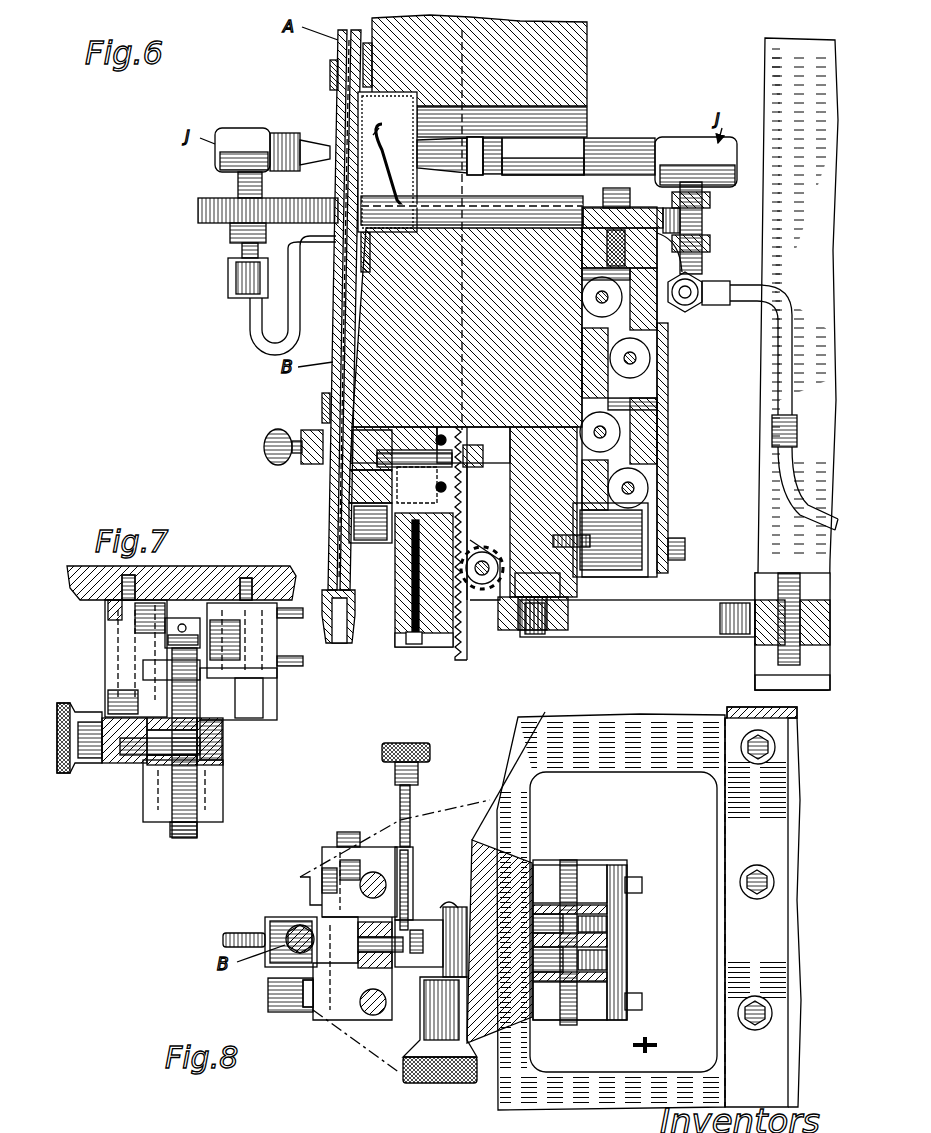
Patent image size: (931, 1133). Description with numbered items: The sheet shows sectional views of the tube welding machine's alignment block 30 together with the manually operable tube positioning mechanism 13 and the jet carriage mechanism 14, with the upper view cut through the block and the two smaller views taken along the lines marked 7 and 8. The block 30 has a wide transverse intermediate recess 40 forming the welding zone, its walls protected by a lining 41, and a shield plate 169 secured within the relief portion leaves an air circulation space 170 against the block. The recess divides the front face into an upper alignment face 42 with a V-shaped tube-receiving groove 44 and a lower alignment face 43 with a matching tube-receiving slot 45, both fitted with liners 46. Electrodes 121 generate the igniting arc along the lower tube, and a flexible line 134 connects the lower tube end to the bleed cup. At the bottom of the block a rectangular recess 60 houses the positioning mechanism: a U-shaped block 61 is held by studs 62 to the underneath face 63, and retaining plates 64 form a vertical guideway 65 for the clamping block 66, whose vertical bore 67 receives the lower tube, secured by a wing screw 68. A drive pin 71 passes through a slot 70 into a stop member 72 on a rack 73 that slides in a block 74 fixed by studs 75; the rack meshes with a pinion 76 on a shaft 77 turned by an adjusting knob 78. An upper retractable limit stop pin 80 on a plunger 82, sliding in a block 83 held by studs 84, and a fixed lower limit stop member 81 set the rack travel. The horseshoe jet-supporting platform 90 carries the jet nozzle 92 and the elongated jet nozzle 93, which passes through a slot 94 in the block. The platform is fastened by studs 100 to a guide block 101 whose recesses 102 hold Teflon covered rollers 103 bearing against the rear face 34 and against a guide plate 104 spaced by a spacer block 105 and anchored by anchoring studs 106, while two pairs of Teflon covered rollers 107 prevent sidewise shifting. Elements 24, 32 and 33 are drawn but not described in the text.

In FIG. 6, the section line 7- 7 is at (511, 428).
In FIG. 6, the section line 8- 8 is at (325, 421).
In FIG. 6, the manually operable tube positioning mechanism 13 is at (390, 580).
In FIG. 7, the manually operable tube positioning mechanism 13 is at (100, 653).
In FIG. 8, the manually operable tube positioning mechanism 13 is at (300, 863).
In FIG. 6, the jet carriage mechanism 14 is at (205, 226).
In FIG. 6, the frame wall 24 is at (758, 662).
In FIG. 6, the block 30 is at (516, 336).
In FIG. 7, the block 30 is at (228, 572).
In FIG. 8, the block 30 is at (490, 843).
In FIG. 6, the base plate 32 is at (688, 640).
In FIG. 6, the bracket block 33 is at (548, 632).
In FIG. 8, the bracket block 33 is at (489, 968).
In FIG. 6, the rear face 34 is at (587, 56).
In FIG. 8, the rear face 34 is at (545, 862).
In FIG. 6, the intermediate recess 40 is at (417, 185).
In FIG. 6, the lining 41 is at (450, 208).
In FIG. 6, the upper alignment face 42 is at (338, 48).
In FIG. 6, the lower alignment face 43 is at (282, 295).
In FIG. 6, the tube-receiving groove 44 is at (372, 37).
In FIG. 6, the tube-receiving slot 45 is at (372, 312).
In FIG. 6, the liners 46 is at (372, 66).
In FIG. 6, the rectangular recess 60 is at (485, 440).
In FIG. 6, the block 61 is at (417, 430).
In FIG. 8, the block 61 is at (325, 1012).
In FIG. 7, the studs 62 is at (108, 618).
In FIG. 8, the studs 62 is at (374, 870).
In FIG. 6, the underneath face 63 is at (485, 432).
In FIG. 7, the underneath face 63 is at (118, 658).
In FIG. 8, the underneath face 63 is at (325, 848).
In FIG. 8, the retaining plates 64 is at (318, 1012).
In FIG. 6, the vertical guideway 65 is at (349, 525).
In FIG. 8, the vertical guideway 65 is at (352, 956).
In FIG. 6, the clamping block 66 is at (374, 543).
In FIG. 7, the clamping block 66 is at (265, 712).
In FIG. 8, the clamping block 66 is at (268, 925).
In FIG. 6, the vertical bore 67 is at (370, 430).
In FIG. 8, the vertical bore 67 is at (295, 935).
In FIG. 6, the wing screw 68 is at (265, 453).
In FIG. 8, the wing screw 68 is at (223, 940).
In FIG. 6, the slot 70 is at (405, 450).
In FIG. 7, the slot 70 is at (197, 683).
In FIG. 8, the slot 70 is at (375, 936).
In FIG. 6, the drive pin 71 is at (417, 485).
In FIG. 8, the drive pin 71 is at (360, 940).
In FIG. 6, the stop member 72 is at (480, 462).
In FIG. 7, the stop member 72 is at (178, 620).
In FIG. 8, the stop member 72 is at (418, 965).
In FIG. 6, the rack 73 is at (460, 660).
In FIG. 7, the rack 73 is at (183, 838).
In FIG. 8, the rack 73 is at (430, 935).
In FIG. 6, the block 74 is at (432, 648).
In FIG. 7, the block 74 is at (148, 797).
In FIG. 6, the studs 75 is at (413, 648).
In FIG. 6, the pinion 76 is at (487, 595).
In FIG. 7, the pinion 76 is at (205, 760).
In FIG. 8, the pinion 76 is at (440, 1010).
In FIG. 6, the shaft 77 is at (493, 562).
In FIG. 7, the shaft 77 is at (145, 760).
In FIG. 7, the adjusting knob 78 is at (78, 775).
In FIG. 8, the adjusting knob 78 is at (448, 1083).
In FIG. 6, the upper retractable limit stop pin 80 is at (442, 434).
In FIG. 7, the upper retractable limit stop pin 80 is at (295, 620).
In FIG. 8, the upper retractable limit stop pin 80 is at (412, 796).
In FIG. 6, the fixed lower limit stop member 81 is at (450, 487).
In FIG. 7, the fixed lower limit stop member 81 is at (303, 662).
In FIG. 8, the plunger 82 is at (430, 754).
In FIG. 7, the block 83 is at (272, 680).
In FIG. 8, the studs 84 is at (345, 833).
In FIG. 6, the jet-supporting platform 90 is at (198, 208).
In FIG. 6, the jet nozzle 92 is at (296, 130).
In FIG. 6, the jet nozzle 93 is at (445, 150).
In FIG. 6, the slot 94 is at (587, 116).
In FIG. 6, the studs 100 is at (630, 196).
In FIG. 6, the guide block 101 is at (650, 405).
In FIG. 8, the guide block 101 is at (607, 946).
In FIG. 6, the recesses 102 is at (705, 308).
In FIG. 6, the Teflon covered rollers 103 is at (583, 300).
In FIG. 8, the Teflon covered rollers 103 is at (610, 925).
In FIG. 6, the guide plate 104 is at (625, 443).
In FIG. 8, the guide plate 104 is at (607, 908).
In FIG. 6, the spacer block 105 is at (598, 565).
In FIG. 6, the anchoring studs 106 is at (686, 552).
In FIG. 8, the Teflon covered rollers 107 is at (575, 862).
In FIG. 6, the electrodes 121 is at (384, 173).
In FIG. 6, the flexible line 134 is at (350, 640).
In FIG. 6, the shield plate 169 is at (418, 110).
In FIG. 6, the air circulation space 170 is at (412, 93).